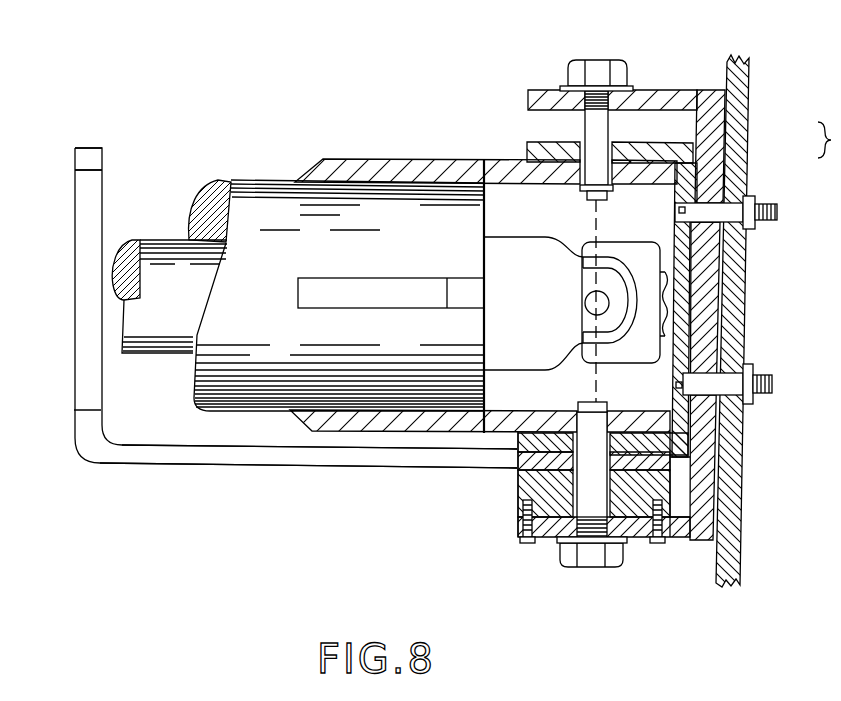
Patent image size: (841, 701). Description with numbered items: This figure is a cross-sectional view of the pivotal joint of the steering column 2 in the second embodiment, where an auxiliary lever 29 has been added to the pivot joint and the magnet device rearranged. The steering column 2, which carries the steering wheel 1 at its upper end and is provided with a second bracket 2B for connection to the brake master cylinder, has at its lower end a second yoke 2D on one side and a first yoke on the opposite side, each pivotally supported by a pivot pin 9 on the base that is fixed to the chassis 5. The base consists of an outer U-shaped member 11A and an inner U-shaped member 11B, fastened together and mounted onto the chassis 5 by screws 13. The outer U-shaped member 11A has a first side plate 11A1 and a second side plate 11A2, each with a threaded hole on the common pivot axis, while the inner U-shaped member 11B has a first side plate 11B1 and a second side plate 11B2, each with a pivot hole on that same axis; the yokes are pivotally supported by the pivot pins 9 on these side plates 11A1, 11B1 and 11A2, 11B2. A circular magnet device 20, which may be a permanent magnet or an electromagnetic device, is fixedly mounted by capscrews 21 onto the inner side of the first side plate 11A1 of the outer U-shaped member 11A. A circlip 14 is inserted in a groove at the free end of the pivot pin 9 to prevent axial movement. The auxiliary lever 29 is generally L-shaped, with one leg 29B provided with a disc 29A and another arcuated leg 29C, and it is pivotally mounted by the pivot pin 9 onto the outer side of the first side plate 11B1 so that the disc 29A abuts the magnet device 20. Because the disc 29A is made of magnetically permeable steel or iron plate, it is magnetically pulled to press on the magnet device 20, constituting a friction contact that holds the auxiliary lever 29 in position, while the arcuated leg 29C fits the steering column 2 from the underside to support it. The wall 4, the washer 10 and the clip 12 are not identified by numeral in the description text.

The steering wheel 1 is at (644, 310).
The steering column 2 is at (218, 413).
The second bracket 2B is at (322, 278).
The second yoke 2D is at (438, 159).
The plate 4 is at (693, 260).
The chassis 5 is at (750, 77).
The pivot pin 9 is at (602, 60).
The washer 10 is at (630, 88).
The outer U-shaped member 11A is at (722, 130).
The first side plate 11A1 is at (517, 532).
The second side plate 11A2 is at (528, 92).
The inner U-shaped member 11B is at (697, 183).
The first side plate 11B1 is at (518, 442).
The second side plate 11B2 is at (527, 150).
The clip 12 is at (575, 358).
The screw 13 is at (777, 212).
The circlip 14 is at (575, 188).
The circular magnet device 20 is at (518, 483).
The capscrew 21 is at (527, 543).
The auxiliary lever 29 is at (107, 466).
The disc 29A is at (712, 465).
The leg 29B is at (310, 462).
The arcuated leg 29C is at (102, 185).